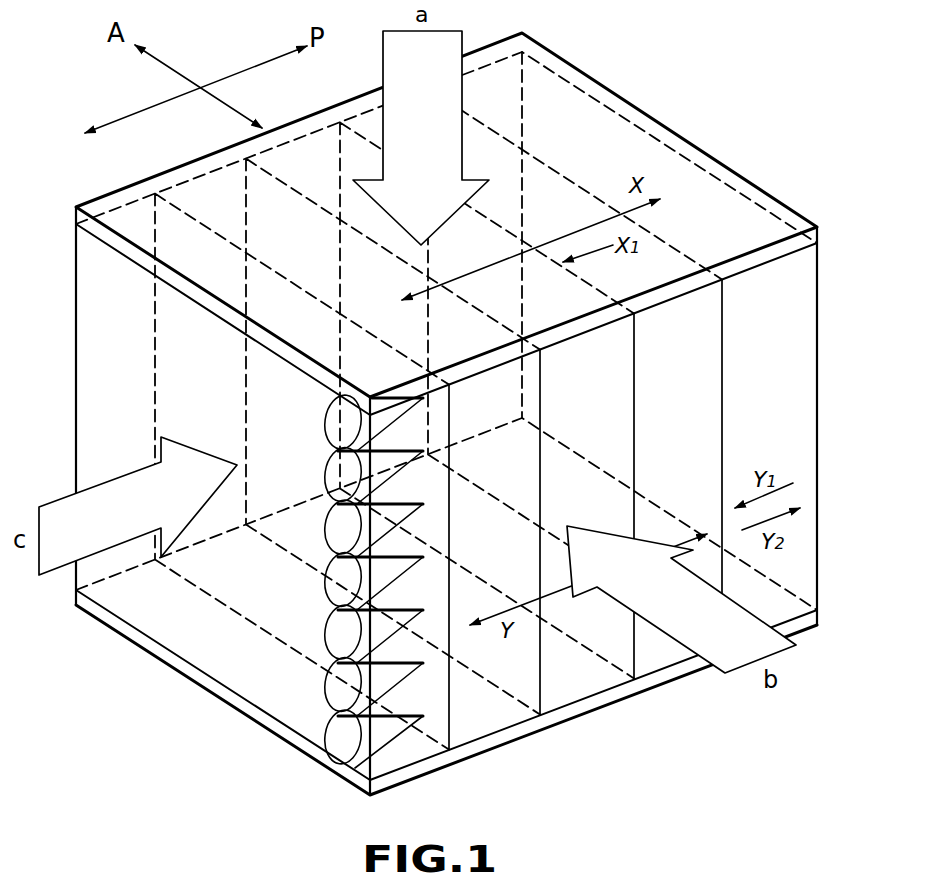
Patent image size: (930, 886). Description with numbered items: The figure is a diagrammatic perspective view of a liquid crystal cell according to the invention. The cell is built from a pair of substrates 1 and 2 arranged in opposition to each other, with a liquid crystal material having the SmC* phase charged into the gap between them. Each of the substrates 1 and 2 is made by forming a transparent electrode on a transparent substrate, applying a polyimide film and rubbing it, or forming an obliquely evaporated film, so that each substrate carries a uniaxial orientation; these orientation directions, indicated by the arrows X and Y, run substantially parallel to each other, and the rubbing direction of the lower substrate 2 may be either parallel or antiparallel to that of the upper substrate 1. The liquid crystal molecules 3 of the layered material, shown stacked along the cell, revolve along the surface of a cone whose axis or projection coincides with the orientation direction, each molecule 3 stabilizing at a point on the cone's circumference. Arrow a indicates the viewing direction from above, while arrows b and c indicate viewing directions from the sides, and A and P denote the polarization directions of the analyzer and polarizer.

The substrate 1 is at (647, 117).
The substrate 2 is at (610, 697).
The liquid crystal molecule 3 is at (380, 716).